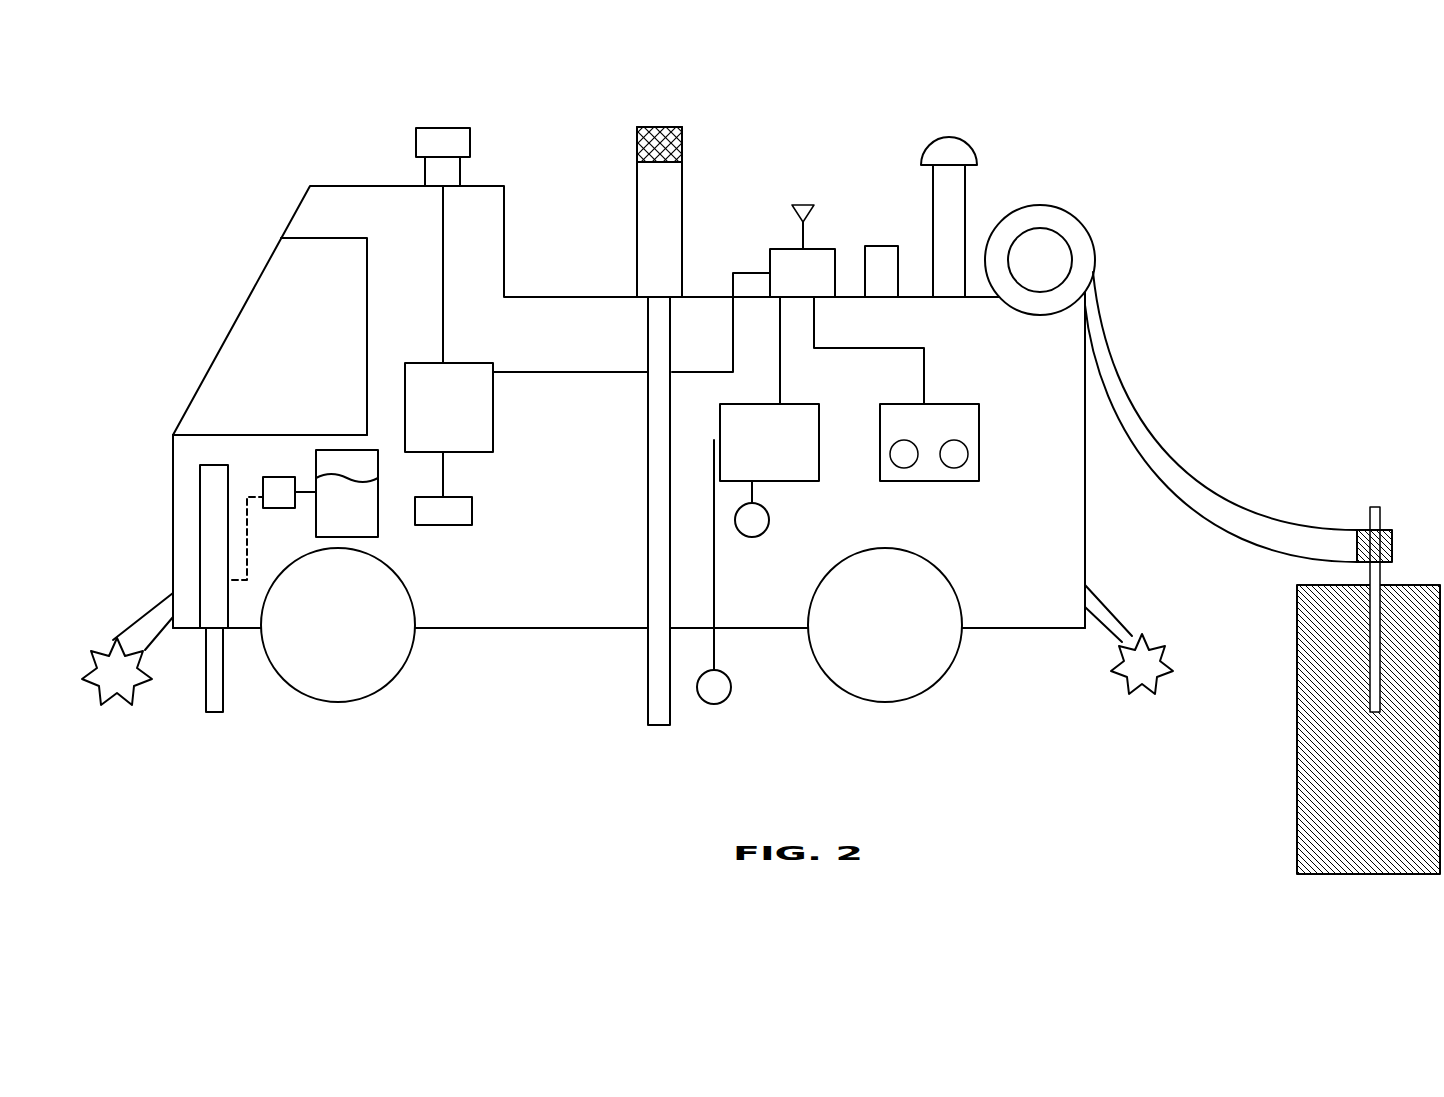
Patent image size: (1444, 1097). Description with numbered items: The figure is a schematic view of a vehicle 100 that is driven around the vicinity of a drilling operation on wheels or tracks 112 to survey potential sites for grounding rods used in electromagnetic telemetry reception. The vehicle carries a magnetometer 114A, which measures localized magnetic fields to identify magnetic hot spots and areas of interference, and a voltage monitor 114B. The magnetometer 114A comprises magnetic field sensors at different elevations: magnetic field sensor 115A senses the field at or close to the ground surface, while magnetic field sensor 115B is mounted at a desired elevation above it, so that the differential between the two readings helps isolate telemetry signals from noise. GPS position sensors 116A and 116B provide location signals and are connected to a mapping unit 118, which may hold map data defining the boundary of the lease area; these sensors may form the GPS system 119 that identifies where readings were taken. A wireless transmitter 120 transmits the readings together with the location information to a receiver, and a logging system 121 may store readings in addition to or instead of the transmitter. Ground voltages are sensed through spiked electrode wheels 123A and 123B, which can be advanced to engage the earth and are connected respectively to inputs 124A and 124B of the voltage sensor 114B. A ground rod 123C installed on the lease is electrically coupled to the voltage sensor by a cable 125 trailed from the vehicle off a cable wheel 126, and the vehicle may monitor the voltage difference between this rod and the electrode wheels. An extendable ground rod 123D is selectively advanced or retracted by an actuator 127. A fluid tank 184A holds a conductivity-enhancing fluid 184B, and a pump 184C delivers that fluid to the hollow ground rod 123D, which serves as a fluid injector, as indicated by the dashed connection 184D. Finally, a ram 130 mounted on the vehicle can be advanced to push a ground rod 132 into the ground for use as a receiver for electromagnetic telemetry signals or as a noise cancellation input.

The vehicle 100 is at (1028, 78).
The wheels or tracks 112 is at (362, 662).
The magnetometer 114A is at (812, 481).
The voltage monitor 114B is at (929, 481).
The magnetic field sensor 115A is at (714, 704).
The magnetic field sensor 115B is at (752, 537).
The GPS position sensor 116A is at (416, 138).
The GPS position sensor 116B is at (930, 157).
The mapping unit 118 is at (493, 452).
The GPS system 119 is at (457, 525).
The wireless transmitter 120 is at (770, 249).
The logging system 121 is at (880, 246).
The spiked wheel 123A is at (113, 640).
The spiked wheel 123B is at (1140, 695).
The ground rod 123C is at (1372, 624).
The extendable ground rod 123D is at (210, 712).
The input 124A is at (904, 440).
The input 124B is at (954, 440).
The cable 125 is at (1175, 455).
The cable wheel 126 is at (1073, 210).
The actuator 127 is at (200, 465).
The ram 130 is at (660, 127).
The ground rod 132 is at (647, 660).
The fluid tank 184A is at (347, 450).
The conductivity-enhancing fluid 184B is at (352, 515).
The pump 184C is at (293, 477).
The dashed connection 184D is at (242, 585).